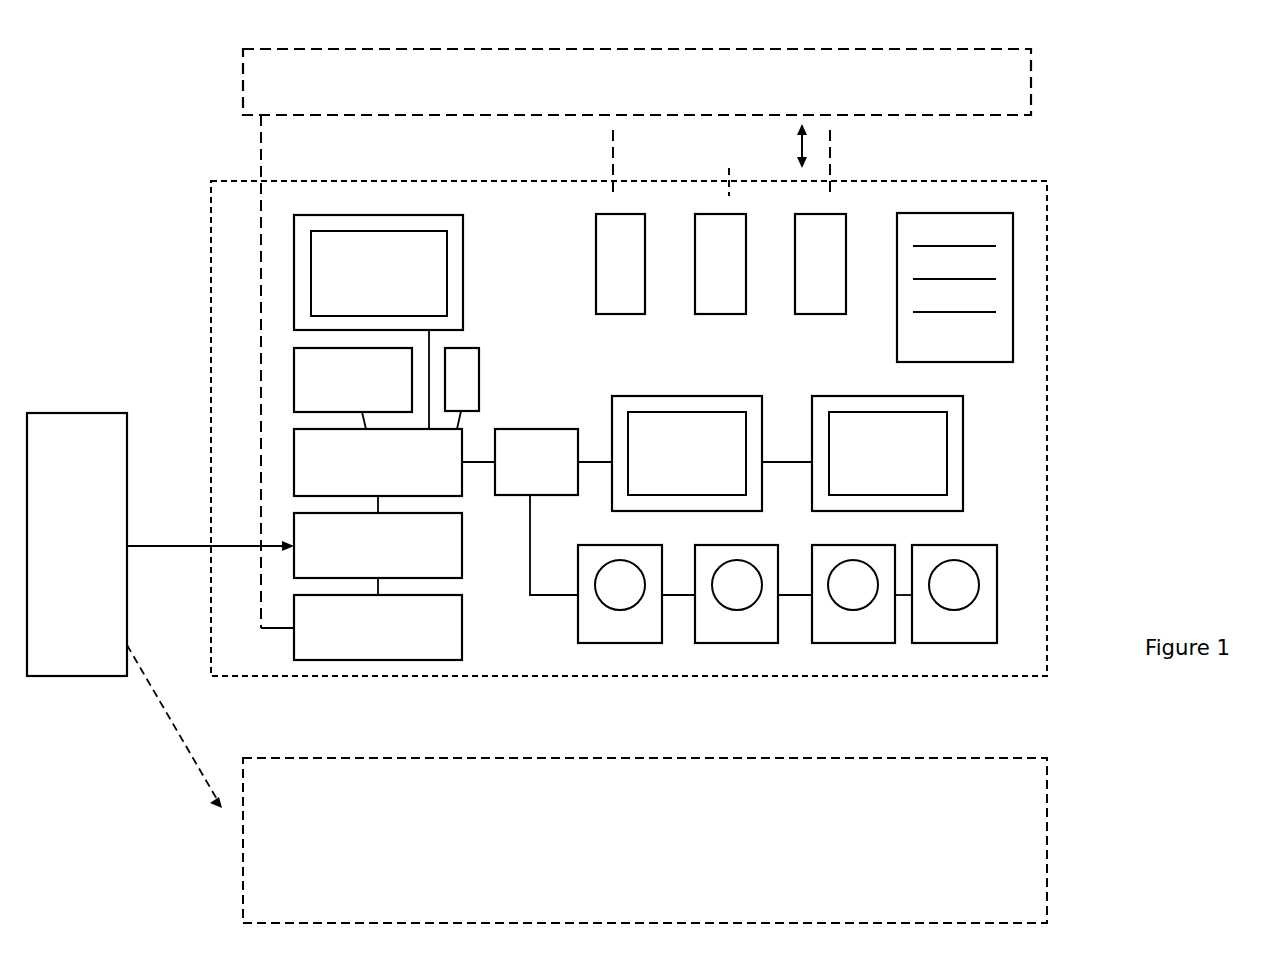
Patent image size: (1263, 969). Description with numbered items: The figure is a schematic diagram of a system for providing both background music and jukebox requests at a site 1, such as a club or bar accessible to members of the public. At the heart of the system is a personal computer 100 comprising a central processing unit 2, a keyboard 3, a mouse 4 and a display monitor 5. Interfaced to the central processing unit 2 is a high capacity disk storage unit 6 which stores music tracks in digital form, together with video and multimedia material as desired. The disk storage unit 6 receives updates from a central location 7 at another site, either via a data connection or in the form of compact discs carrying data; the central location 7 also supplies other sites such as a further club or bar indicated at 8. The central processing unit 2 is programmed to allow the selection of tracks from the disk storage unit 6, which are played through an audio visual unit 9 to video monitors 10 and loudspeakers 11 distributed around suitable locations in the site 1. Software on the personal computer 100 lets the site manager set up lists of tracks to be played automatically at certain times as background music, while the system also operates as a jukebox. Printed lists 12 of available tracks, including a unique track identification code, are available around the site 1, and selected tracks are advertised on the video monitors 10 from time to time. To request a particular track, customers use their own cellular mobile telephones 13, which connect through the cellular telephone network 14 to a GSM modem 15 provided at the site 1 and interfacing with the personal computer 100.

The site 1 is at (1052, 263).
The central processing unit 2 is at (394, 471).
The keyboard 3 is at (353, 388).
The mouse 4 is at (479, 379).
The display monitor 5 is at (378, 322).
The high capacity disk storage unit 6 is at (378, 554).
The central location 7 is at (160, 610).
The other site 8 is at (645, 840).
The audio visual unit 9 is at (553, 512).
The video monitors 10 is at (787, 453).
The loudspeakers 11 is at (628, 643).
The printed lists 12 is at (1013, 329).
The cellular mobile telephones 13 is at (810, 314).
The cellular telephone network 14 is at (637, 338).
The GSM modem 15 is at (361, 627).
The personal computer 100 is at (270, 315).